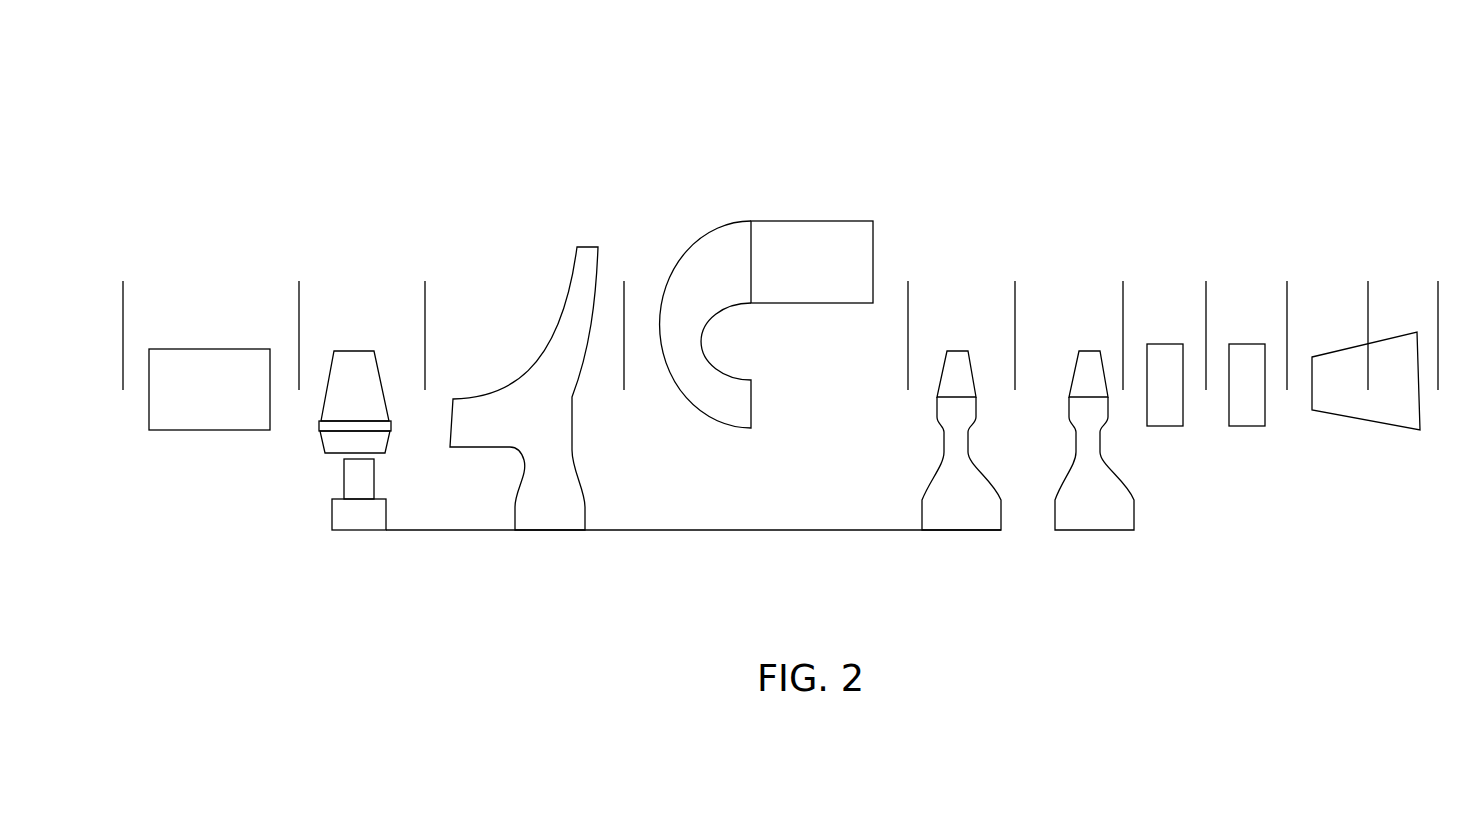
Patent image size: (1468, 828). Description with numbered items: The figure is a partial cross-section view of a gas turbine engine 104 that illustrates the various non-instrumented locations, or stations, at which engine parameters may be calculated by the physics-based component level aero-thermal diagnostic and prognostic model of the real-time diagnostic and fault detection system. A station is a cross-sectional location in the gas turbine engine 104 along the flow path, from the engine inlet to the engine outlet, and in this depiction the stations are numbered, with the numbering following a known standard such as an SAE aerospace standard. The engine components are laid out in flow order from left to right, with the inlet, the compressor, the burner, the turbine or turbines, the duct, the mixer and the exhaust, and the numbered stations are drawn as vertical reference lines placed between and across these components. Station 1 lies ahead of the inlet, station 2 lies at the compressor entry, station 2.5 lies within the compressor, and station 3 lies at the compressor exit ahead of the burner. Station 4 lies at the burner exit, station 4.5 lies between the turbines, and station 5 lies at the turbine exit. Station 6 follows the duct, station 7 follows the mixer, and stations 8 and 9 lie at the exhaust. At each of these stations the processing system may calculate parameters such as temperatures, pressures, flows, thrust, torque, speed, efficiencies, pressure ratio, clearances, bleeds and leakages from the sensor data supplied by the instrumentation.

The gas turbine engine 104 is at (784, 316).
The station 1 is at (123, 321).
The station 2 is at (299, 321).
The station 2.5 is at (425, 321).
The station 3 is at (624, 321).
The station 4 is at (908, 321).
The station 4.5 is at (1015, 321).
The station 5 is at (1123, 321).
The station 6 is at (1206, 321).
The station 7 is at (1287, 321).
The station 8 is at (1368, 321).
The station 9 is at (1438, 321).